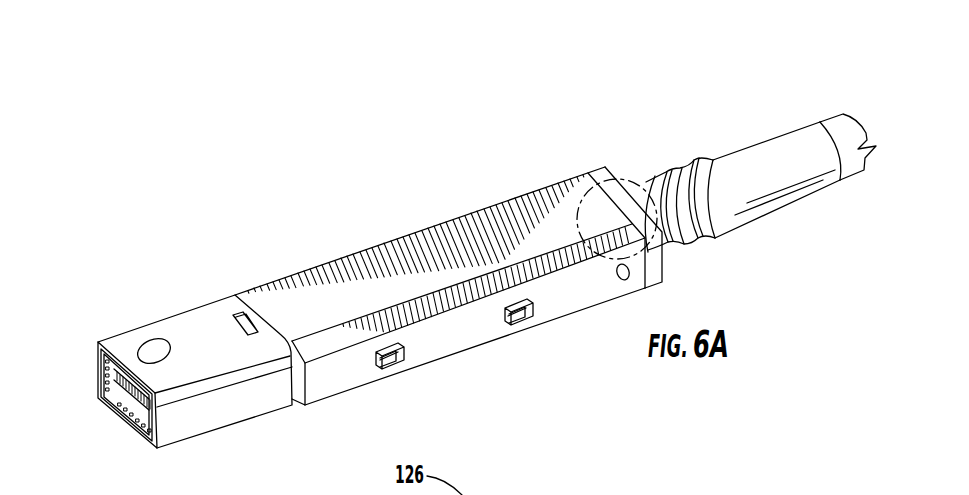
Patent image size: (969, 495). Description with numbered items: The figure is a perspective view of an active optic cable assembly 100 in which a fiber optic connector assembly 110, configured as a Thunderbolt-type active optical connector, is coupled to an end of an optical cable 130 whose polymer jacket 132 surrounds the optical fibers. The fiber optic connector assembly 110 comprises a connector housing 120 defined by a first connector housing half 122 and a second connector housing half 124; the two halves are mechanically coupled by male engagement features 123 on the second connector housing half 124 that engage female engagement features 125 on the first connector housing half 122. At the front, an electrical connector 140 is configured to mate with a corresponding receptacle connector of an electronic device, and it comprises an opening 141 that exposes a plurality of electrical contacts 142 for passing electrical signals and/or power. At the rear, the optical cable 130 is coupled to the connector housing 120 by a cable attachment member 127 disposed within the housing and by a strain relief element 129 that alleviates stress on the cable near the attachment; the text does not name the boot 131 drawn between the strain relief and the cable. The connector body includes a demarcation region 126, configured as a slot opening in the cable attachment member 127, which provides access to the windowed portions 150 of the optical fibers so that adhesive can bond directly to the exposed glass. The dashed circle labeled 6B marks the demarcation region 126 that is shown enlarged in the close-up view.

The active optic cable assembly 100 is at (246, 137).
The fiber optic connector assembly 110 is at (336, 187).
The connector housing 120 is at (424, 206).
The first connector housing half 122 is at (327, 272).
The male engagement features 123 is at (516, 324).
The second connector housing half 124 is at (185, 322).
The female engagement features 125 is at (505, 320).
The demarcation region 126 is at (650, 172).
The cable attachment member 127 is at (628, 190).
The strain relief element 129 is at (633, 187).
The optical cable 130 is at (661, 87).
The cable boot 131 is at (733, 148).
The polymer jacket 132 is at (842, 125).
The electrical connector 140 is at (121, 429).
The opening 141 is at (102, 379).
The electrical contacts 142 is at (140, 412).
The windowed portions 150 is at (518, 494).
The detail view area 6B is at (587, 197).